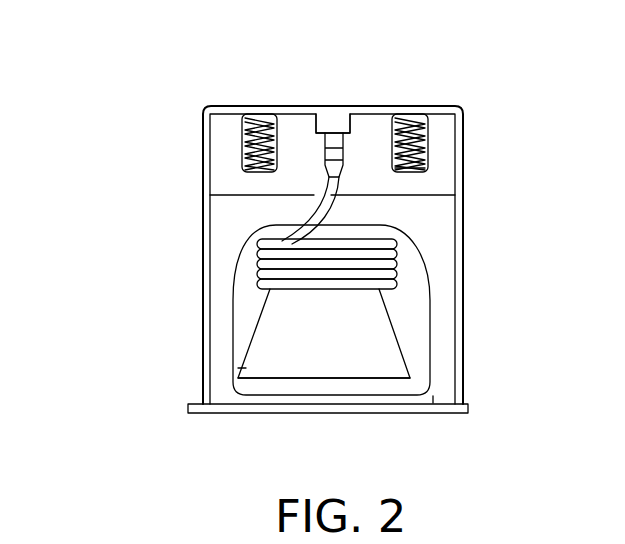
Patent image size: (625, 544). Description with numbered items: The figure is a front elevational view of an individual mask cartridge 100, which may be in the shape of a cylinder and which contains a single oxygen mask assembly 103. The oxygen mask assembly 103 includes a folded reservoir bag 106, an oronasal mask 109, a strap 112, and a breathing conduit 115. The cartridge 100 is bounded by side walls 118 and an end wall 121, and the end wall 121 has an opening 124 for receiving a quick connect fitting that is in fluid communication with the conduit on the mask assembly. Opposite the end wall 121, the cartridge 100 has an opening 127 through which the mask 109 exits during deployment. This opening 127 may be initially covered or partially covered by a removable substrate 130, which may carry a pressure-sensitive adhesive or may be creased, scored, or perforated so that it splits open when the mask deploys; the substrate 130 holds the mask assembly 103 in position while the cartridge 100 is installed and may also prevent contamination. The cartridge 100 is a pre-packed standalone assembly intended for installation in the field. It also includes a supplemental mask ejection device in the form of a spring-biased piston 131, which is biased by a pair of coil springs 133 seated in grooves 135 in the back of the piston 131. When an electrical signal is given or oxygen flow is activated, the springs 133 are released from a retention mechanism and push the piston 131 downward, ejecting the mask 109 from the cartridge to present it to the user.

The cartridge 100 is at (158, 248).
The oxygen mask assembly 103 is at (431, 272).
The folded reservoir bag 106 is at (257, 274).
The oronasal mask 109 is at (245, 369).
The strap 112 is at (232, 330).
The breathing conduit 115 is at (327, 203).
The side walls 118 is at (463, 318).
The end wall 121 is at (233, 107).
The opening 124 is at (358, 106).
The opening 127 is at (432, 404).
The removable substrate 130 is at (418, 416).
The spring-biased piston 131 is at (237, 186).
The coil springs 133 is at (240, 150).
The grooves 135 is at (428, 170).